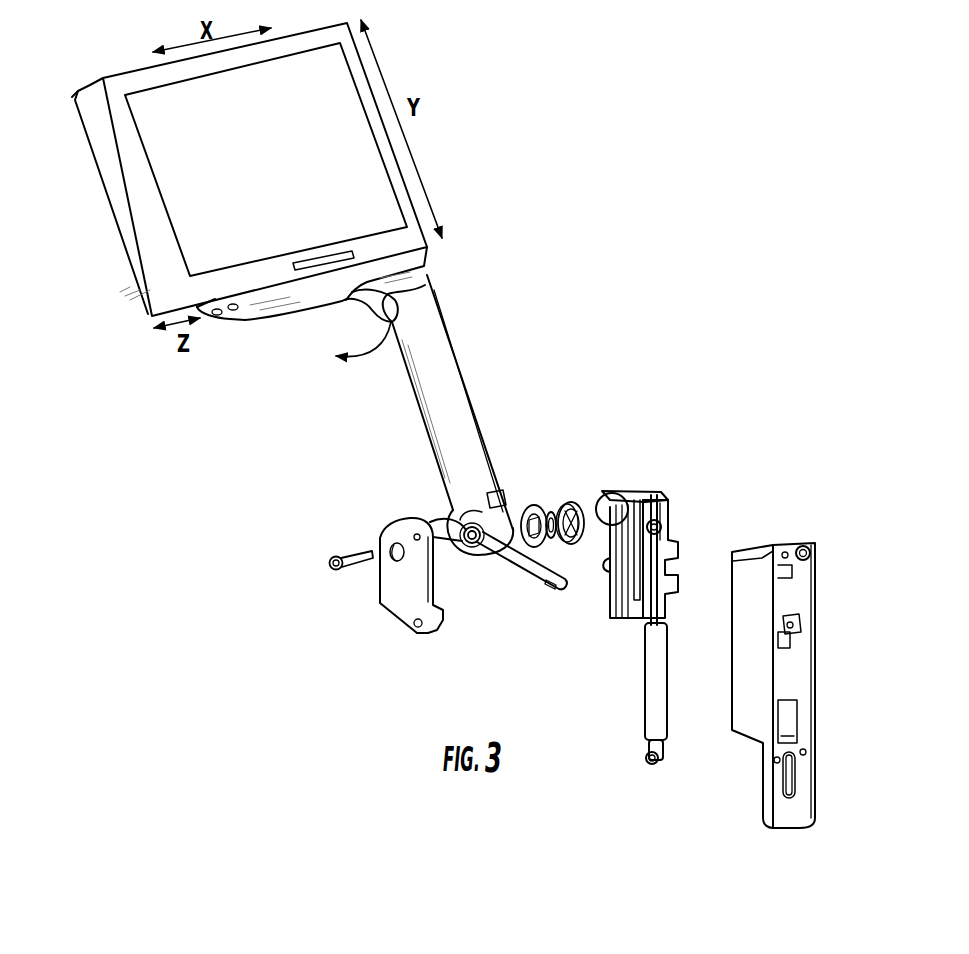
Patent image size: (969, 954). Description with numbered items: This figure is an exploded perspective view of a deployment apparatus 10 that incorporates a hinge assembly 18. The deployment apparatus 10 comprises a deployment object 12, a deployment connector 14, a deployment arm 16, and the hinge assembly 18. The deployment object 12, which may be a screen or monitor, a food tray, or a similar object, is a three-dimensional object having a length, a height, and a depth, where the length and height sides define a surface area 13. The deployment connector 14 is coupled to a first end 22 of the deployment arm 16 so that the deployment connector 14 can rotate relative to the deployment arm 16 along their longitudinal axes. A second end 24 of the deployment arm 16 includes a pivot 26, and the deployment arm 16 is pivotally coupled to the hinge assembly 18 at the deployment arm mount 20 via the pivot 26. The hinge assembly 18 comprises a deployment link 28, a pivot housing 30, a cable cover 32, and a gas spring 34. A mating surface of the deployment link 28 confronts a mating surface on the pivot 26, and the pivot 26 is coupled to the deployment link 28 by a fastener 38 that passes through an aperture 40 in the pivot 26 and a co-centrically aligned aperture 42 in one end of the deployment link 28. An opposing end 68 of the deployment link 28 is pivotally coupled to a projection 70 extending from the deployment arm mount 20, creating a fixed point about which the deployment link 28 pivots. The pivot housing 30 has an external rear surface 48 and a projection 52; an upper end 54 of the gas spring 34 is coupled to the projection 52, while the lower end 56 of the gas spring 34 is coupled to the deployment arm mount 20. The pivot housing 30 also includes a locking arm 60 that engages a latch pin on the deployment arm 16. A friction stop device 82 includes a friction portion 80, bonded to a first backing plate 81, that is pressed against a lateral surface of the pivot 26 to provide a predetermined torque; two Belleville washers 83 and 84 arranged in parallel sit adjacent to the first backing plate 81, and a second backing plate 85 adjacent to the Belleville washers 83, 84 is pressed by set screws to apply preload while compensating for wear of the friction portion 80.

The deployment apparatus 10 is at (532, 130).
The deployment object 12 is at (150, 63).
The surface area 13 is at (275, 80).
The deployment connector 14 is at (412, 292).
The deployment arm 16 is at (463, 400).
The hinge assembly 18 is at (754, 499).
The deployment arm mount 20 is at (800, 544).
The first end 22 is at (408, 373).
The second end 24 is at (437, 527).
The pivot 26 is at (483, 453).
The deployment link 28 is at (517, 563).
The pivot housing 30 is at (603, 593).
The cable cover 32 is at (670, 513).
The gas spring 34 is at (653, 732).
The fastener 38 is at (330, 562).
The aperture 40 is at (383, 537).
The aperture 42 is at (470, 544).
The external rear surface 48 is at (603, 492).
The projection 52 is at (657, 500).
The upper end 54 is at (664, 542).
The lower end 56 is at (652, 767).
The locking arm 60 is at (648, 593).
The opposing end 68 is at (552, 593).
The projection 70 is at (812, 608).
The friction portion 80 is at (528, 505).
The first backing plate 81 is at (538, 543).
The friction stop device 82 is at (564, 424).
The Belleville washer 83 is at (547, 513).
The Belleville washer 84 is at (567, 507).
The second backing plate 85 is at (573, 548).